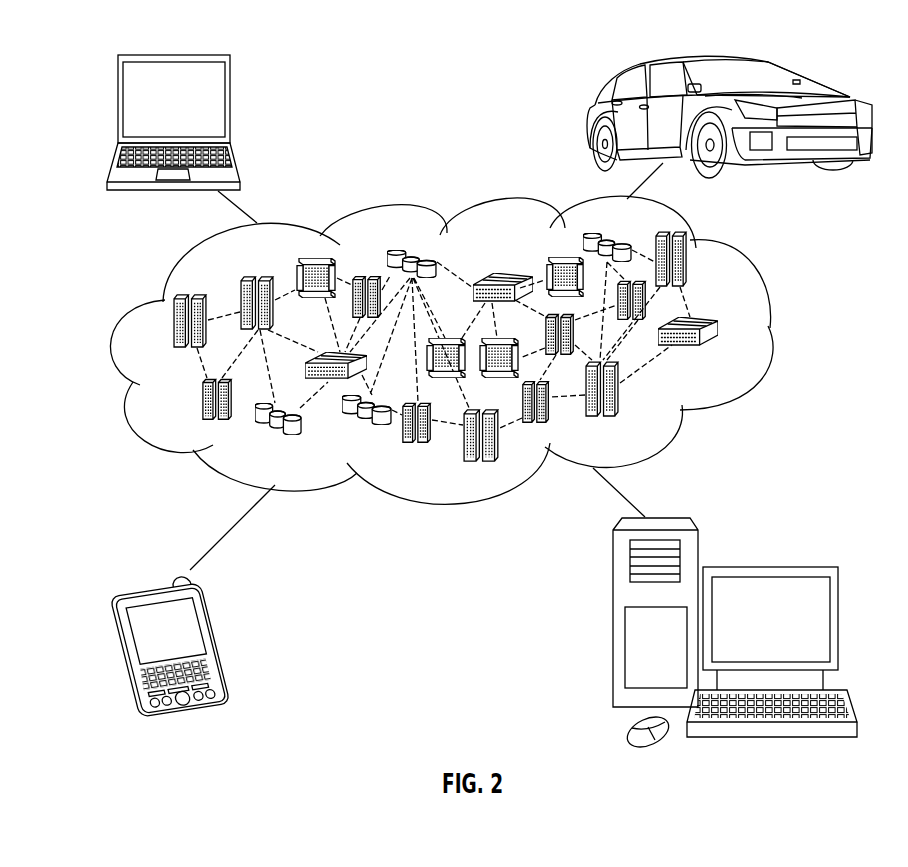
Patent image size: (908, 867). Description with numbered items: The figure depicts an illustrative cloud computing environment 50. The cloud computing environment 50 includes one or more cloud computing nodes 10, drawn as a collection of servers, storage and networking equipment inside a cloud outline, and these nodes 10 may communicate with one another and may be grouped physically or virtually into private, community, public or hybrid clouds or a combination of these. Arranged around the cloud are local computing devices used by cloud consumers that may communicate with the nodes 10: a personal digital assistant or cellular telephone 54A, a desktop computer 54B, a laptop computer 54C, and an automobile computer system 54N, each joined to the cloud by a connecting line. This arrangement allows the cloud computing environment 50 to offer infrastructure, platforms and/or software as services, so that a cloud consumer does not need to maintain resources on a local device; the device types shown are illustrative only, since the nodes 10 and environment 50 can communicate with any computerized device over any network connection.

The cloud computing node 10 is at (722, 355).
The cloud computing environment 50 is at (466, 350).
The personal digital assistant or cellular telephone 54A is at (222, 643).
The desktop computer 54B is at (768, 567).
The laptop computer 54C is at (232, 107).
The automobile computer system 54N is at (588, 118).